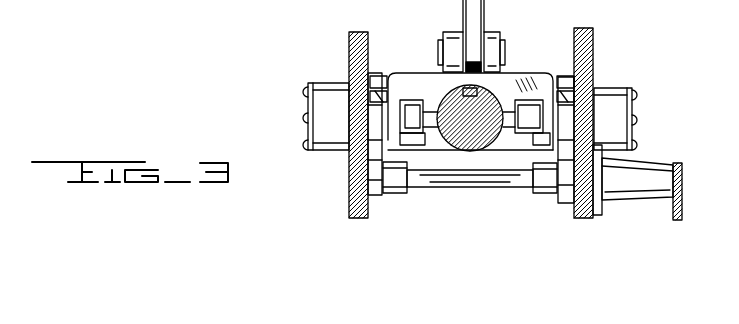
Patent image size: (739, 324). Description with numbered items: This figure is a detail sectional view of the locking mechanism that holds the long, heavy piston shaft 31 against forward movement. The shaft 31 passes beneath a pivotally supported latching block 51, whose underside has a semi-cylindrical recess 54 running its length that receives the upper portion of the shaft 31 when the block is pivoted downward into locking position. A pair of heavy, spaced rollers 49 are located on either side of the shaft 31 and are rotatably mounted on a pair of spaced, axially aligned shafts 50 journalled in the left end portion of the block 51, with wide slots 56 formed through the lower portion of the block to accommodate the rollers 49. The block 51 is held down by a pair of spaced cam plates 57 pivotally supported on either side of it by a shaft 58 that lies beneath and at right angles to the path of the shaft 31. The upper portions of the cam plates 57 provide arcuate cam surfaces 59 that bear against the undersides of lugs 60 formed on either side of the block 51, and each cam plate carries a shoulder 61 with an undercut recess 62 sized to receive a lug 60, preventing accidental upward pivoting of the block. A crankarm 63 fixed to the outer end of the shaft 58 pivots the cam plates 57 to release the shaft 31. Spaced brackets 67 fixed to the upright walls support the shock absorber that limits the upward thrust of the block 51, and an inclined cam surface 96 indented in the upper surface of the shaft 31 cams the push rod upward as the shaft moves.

The shaft 31 is at (470, 118).
The rollers 49 is at (530, 138).
The shafts 50 is at (414, 130).
The latching block 51 is at (514, 73).
The semi-cylindrical recess 54 is at (441, 106).
The slots 56 is at (517, 90).
The cam plates 57 is at (381, 190).
The shaft 58 is at (479, 188).
The arcuate cam surfaces 59 is at (593, 110).
The lugs 60 is at (378, 82).
The shoulder 61 is at (353, 65).
The recess 62 is at (367, 97).
The crankarm 63 is at (683, 205).
The brackets 67 is at (485, 15).
The cam surface 96 is at (446, 88).